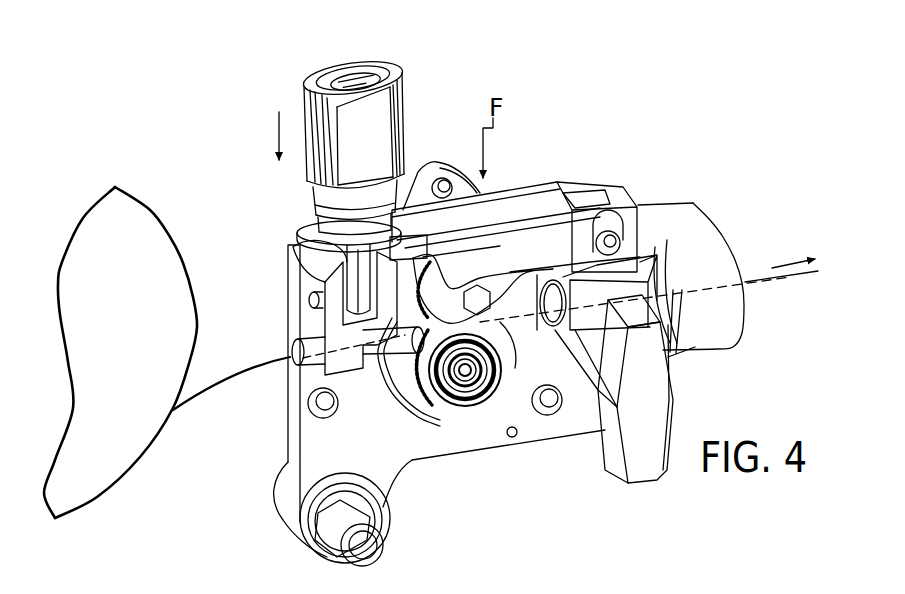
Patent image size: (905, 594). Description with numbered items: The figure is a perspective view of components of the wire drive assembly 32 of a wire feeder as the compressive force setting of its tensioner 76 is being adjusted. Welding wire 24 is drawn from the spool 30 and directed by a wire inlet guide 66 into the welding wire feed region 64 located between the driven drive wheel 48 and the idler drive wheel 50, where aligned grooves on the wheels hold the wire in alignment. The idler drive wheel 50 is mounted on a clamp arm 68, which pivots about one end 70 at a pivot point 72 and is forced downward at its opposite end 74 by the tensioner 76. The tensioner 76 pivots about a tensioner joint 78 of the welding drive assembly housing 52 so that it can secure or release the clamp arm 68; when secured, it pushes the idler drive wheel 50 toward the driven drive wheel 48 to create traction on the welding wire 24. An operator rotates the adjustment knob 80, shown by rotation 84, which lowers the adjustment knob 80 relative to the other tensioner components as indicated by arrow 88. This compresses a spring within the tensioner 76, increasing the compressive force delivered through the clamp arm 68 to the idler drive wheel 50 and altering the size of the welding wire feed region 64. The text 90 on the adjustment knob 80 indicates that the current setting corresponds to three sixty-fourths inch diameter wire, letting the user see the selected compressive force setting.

The welding wire 24 is at (788, 282).
The spool 30 is at (138, 364).
The wire drive assembly 32 is at (748, 180).
The driven drive wheel 48 is at (465, 402).
The idler drive wheel 50 is at (432, 300).
The welding drive assembly housing 52 is at (310, 443).
The welding wire feed region 64 is at (487, 323).
The wire inlet guide 66 is at (290, 363).
The clamp arm 68 is at (530, 198).
The end of clamp arm 70 is at (615, 191).
The pivot point 72 is at (612, 243).
The opposite end of clamp arm 74 is at (289, 231).
The tensioner 76 is at (297, 184).
The tensioner joint 78 is at (308, 300).
The adjustment knob 80 is at (384, 117).
The rotation 84 is at (320, 44).
The arrow 88 is at (279, 138).
The text 90 is at (376, 149).